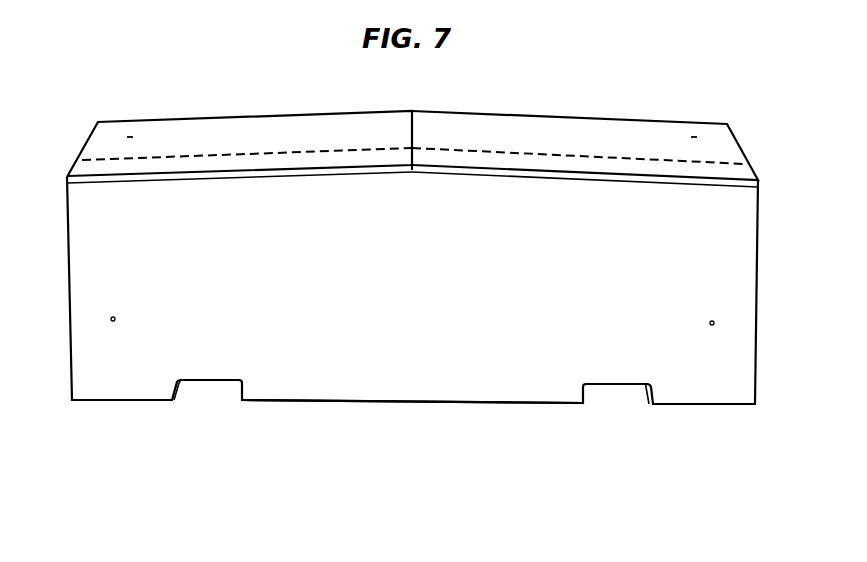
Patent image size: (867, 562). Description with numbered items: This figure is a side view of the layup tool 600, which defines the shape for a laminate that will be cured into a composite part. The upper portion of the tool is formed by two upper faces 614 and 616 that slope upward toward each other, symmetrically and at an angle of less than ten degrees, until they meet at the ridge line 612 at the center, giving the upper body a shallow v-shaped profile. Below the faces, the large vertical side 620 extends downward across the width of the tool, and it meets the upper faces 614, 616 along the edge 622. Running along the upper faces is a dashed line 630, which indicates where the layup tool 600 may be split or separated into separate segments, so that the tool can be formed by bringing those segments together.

The layup tool 600 is at (673, 445).
The ridge line 612 is at (413, 132).
The upper face 614 is at (658, 140).
The upper face 616 is at (173, 135).
The vertical side 620 is at (462, 367).
The edge 622 is at (297, 168).
The line 630 is at (547, 153).